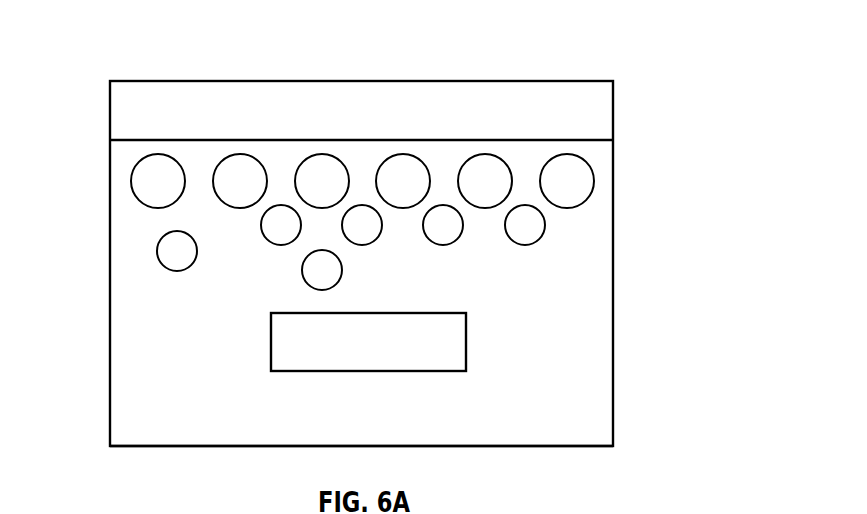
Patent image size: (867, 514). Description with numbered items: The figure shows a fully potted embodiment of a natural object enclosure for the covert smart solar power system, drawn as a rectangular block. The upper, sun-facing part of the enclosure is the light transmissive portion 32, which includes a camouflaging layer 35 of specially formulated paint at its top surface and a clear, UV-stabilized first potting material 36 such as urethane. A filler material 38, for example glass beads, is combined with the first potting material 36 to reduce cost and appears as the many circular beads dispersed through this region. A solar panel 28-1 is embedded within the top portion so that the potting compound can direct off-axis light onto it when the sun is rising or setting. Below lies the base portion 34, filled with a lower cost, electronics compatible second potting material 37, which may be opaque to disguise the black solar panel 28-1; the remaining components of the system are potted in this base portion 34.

The light transmissive portion 32 is at (573, 43).
The base portion 34 is at (640, 412).
The camouflaging layer 35 is at (443, 122).
The first potting material 36 is at (133, 215).
The second potting material 37 is at (133, 421).
The filler material 38 is at (484, 154).
The solar panel 28-1 is at (393, 354).